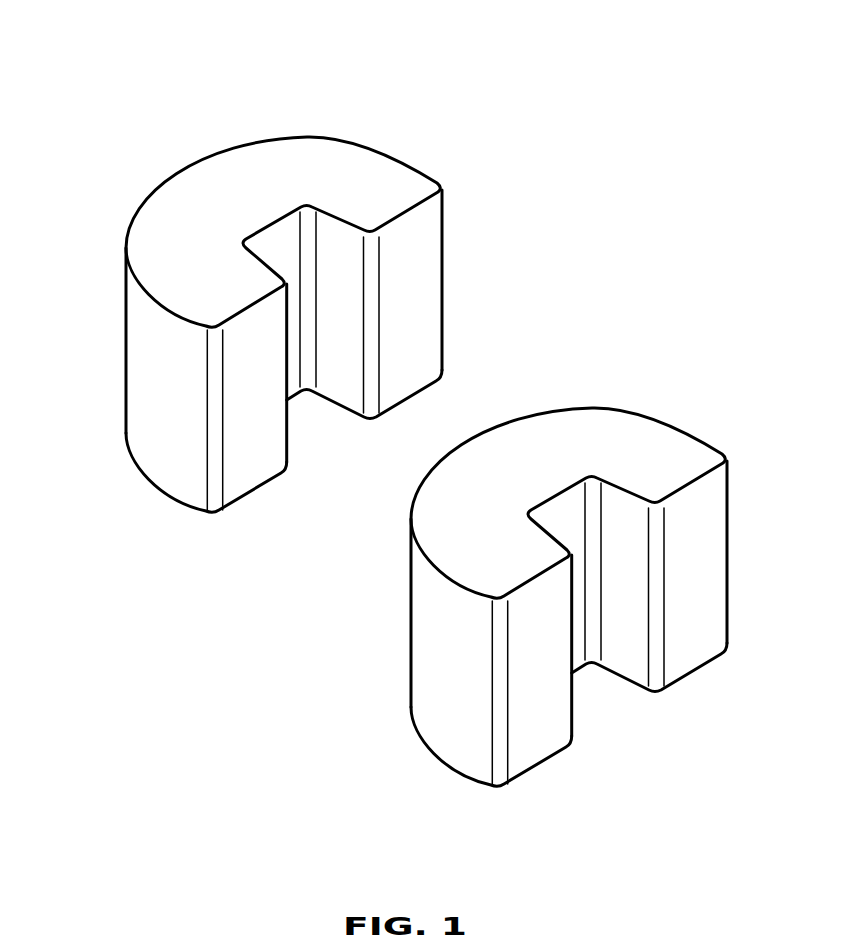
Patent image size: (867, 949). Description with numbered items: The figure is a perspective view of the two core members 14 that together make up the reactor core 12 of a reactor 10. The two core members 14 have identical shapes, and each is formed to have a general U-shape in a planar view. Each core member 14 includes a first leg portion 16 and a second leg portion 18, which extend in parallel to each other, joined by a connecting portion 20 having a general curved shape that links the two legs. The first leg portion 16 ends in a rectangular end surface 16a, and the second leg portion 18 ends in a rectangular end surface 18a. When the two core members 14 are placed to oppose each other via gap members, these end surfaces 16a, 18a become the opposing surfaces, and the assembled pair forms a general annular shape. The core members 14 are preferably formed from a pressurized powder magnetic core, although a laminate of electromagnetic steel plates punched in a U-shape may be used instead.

The reactor 10 is at (298, 110).
The reactor core 12 is at (537, 136).
The core member 14 is at (452, 178).
The first leg portion 16 is at (388, 156).
The end surface 16a is at (423, 297).
The second leg portion 18 is at (173, 310).
The end surface 18a is at (243, 413).
The connecting portion 20 is at (202, 168).